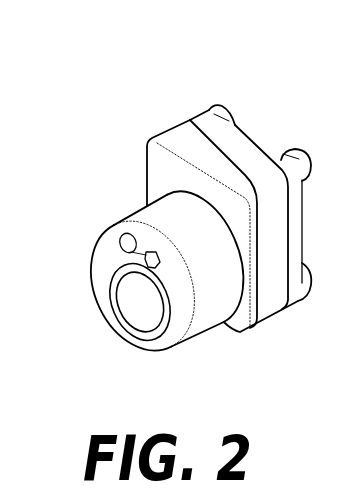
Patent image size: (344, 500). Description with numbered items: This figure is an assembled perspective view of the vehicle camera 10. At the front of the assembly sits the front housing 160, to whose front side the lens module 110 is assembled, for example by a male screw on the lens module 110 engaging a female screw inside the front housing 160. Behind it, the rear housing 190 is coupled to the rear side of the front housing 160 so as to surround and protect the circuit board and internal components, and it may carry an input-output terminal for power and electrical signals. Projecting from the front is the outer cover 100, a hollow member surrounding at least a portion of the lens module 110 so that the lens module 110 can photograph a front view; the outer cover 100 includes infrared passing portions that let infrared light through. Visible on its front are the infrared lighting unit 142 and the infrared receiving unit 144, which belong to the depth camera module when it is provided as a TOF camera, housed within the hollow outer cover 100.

The vehicle camera 10 is at (76, 50).
The outer cover 100 is at (204, 329).
The lens module 110 is at (127, 311).
The infrared lighting unit 142 is at (121, 239).
The infrared receiving unit 144 is at (144, 257).
The front housing 160 is at (150, 158).
The rear housing 190 is at (184, 122).